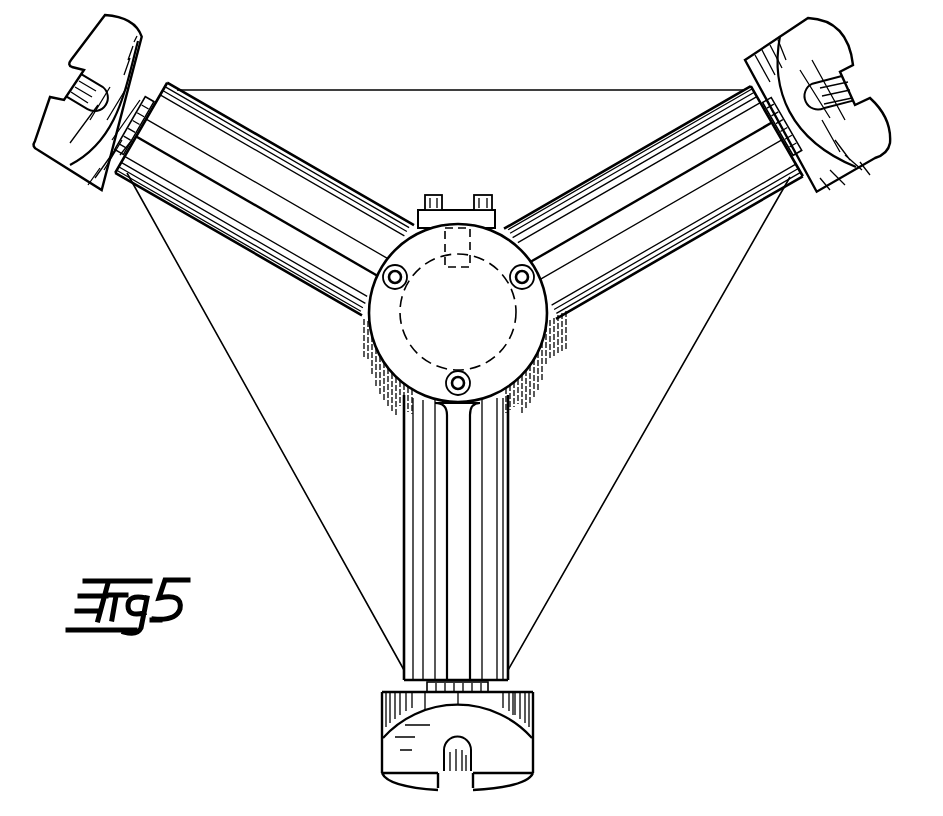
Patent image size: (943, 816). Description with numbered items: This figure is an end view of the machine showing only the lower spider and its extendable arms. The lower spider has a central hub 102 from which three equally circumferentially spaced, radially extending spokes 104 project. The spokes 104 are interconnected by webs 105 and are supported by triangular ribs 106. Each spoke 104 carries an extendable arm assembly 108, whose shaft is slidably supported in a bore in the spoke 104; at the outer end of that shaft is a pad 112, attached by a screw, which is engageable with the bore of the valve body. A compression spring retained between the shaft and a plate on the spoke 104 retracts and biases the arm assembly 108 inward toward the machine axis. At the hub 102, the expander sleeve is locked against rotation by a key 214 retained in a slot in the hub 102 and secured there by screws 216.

The hub 102 is at (383, 330).
The spoke 104 is at (420, 639).
The web 105 is at (348, 534).
The triangular rib 106 is at (452, 478).
The extendable arm assembly 108 is at (540, 723).
The pad 112 is at (380, 714).
The key 214 is at (452, 213).
The screw 216 is at (424, 197).